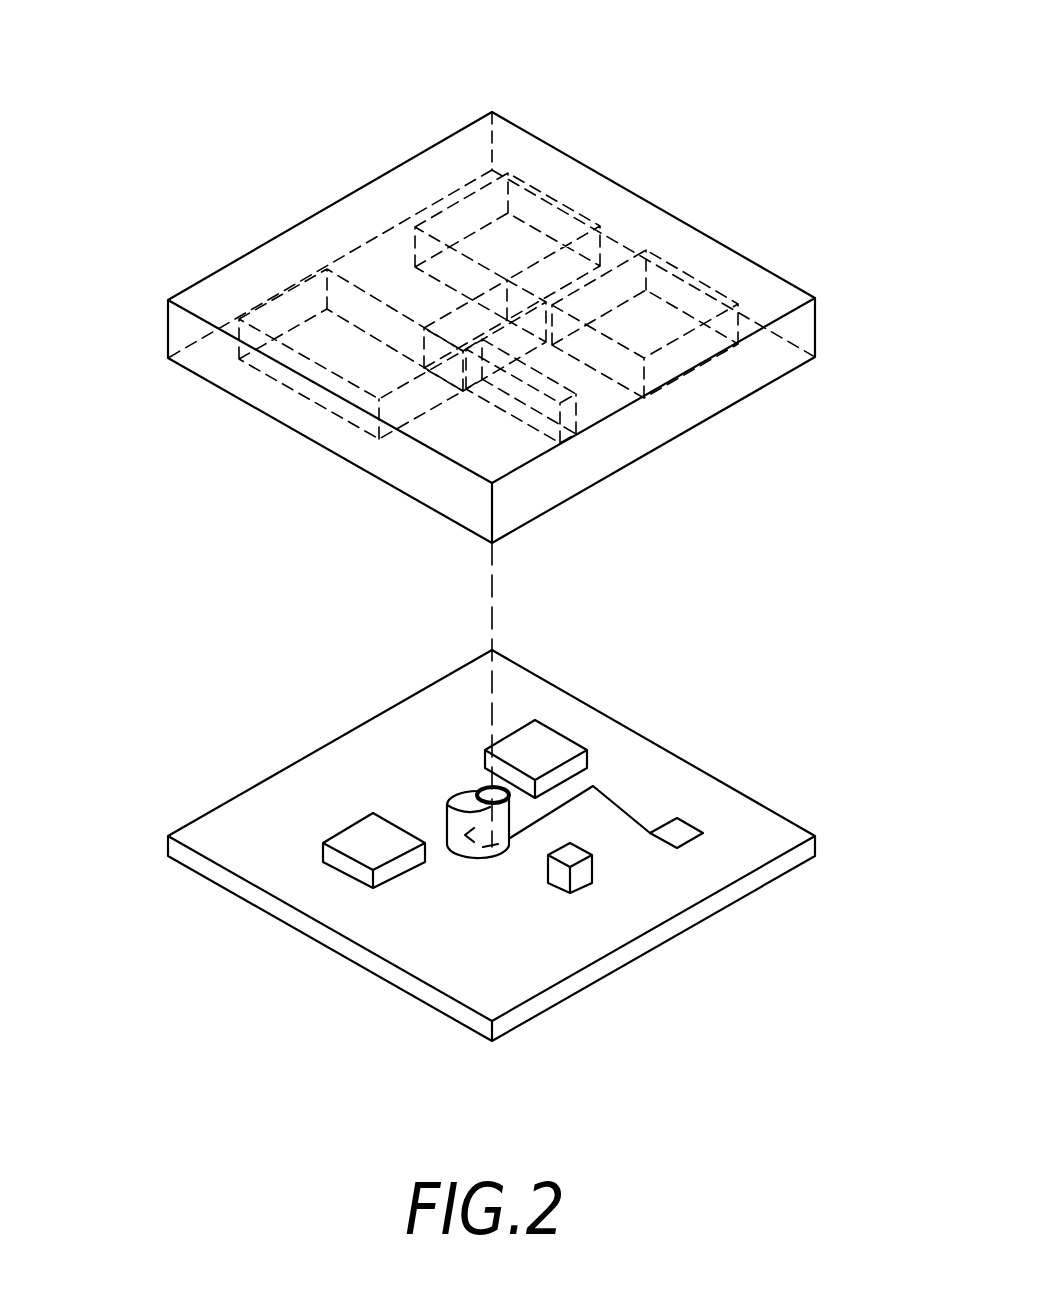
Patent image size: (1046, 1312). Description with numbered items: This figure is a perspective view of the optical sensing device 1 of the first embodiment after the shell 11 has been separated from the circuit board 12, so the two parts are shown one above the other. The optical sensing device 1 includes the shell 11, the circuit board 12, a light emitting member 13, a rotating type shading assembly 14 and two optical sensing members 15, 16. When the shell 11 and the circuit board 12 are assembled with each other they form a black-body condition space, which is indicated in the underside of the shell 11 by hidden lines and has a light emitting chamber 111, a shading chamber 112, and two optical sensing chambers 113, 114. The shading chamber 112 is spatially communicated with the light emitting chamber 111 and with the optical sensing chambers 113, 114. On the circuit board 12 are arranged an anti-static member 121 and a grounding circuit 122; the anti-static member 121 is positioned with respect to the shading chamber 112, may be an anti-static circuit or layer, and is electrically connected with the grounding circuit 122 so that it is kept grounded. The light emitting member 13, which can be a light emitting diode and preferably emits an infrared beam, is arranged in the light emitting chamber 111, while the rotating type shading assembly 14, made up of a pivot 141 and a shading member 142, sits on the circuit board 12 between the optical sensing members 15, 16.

The optical sensing device 1 is at (697, 156).
The shell 11 is at (743, 281).
The light emitting chamber 111 is at (594, 419).
The shading chamber 112 is at (465, 313).
The optical sensing chamber 113 is at (308, 396).
The optical sensing chamber 114 is at (560, 224).
The circuit board 12 is at (695, 790).
The anti-static member 121 is at (503, 847).
The grounding circuit 122 is at (680, 843).
The light emitting member 13 is at (580, 878).
The rotating type shading assembly 14 is at (378, 607).
The pivot 141 is at (479, 788).
The shading member 142 is at (463, 798).
The optical sensing member 15 is at (347, 876).
The optical sensing member 16 is at (555, 742).